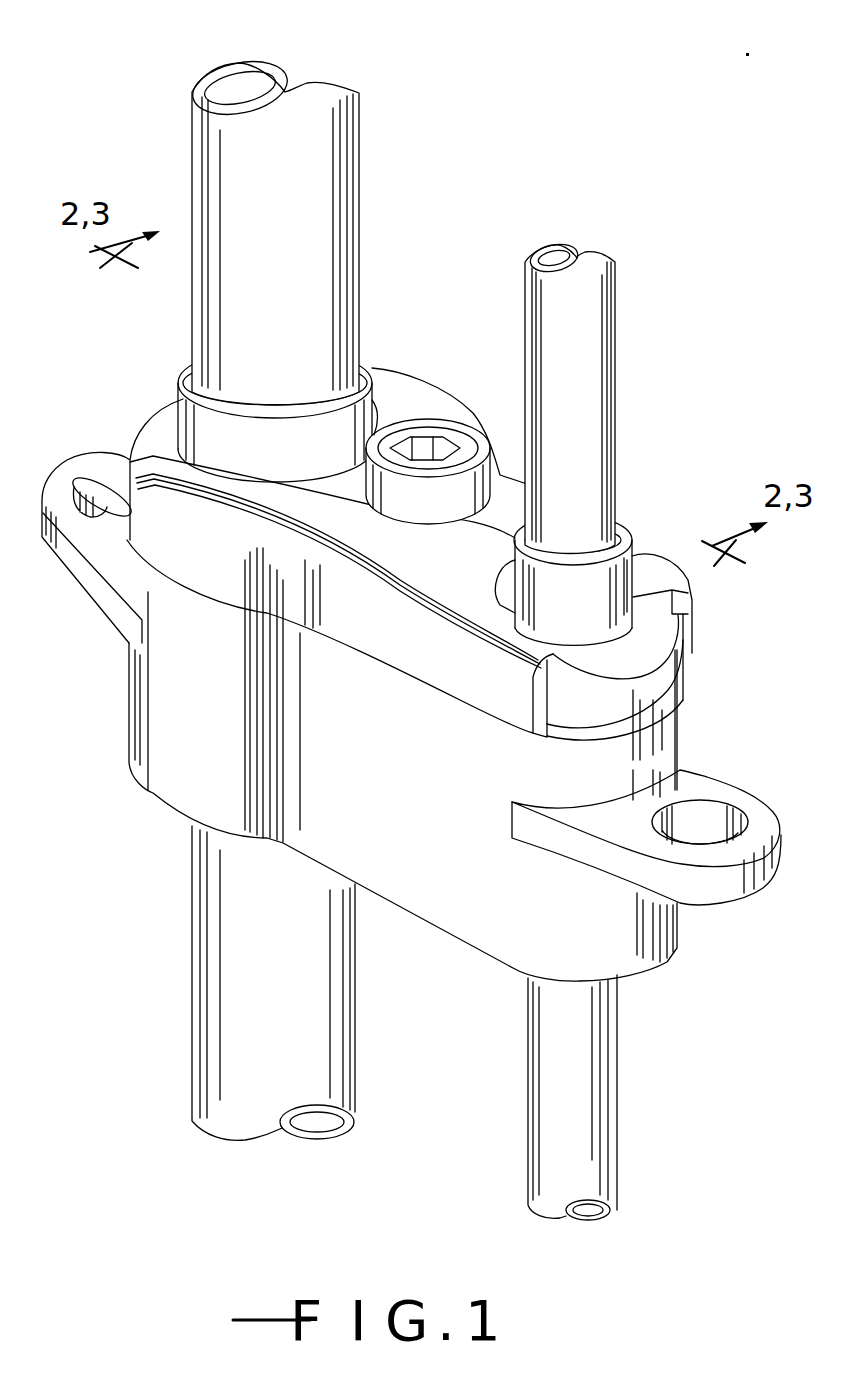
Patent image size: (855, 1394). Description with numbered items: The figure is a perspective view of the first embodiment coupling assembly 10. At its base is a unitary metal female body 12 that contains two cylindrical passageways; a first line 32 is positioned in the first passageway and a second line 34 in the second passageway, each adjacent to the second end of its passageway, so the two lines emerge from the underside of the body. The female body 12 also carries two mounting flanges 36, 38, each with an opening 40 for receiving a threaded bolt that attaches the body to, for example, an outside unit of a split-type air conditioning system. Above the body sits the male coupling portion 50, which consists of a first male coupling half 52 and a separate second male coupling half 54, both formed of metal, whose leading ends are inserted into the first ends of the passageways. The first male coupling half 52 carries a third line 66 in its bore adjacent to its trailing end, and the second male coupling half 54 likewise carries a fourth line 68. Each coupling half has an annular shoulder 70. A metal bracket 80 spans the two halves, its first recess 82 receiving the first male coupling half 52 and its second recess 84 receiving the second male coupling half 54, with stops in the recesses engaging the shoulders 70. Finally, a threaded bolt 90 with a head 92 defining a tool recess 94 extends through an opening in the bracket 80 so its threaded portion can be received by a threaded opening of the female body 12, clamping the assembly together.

The coupling assembly 10 is at (434, 84).
The female body 12 is at (160, 793).
The first line 32 is at (617, 1140).
The second line 34 is at (355, 1047).
The mounting flange 36 is at (70, 473).
The mounting flange 38 is at (718, 780).
The opening 40 is at (103, 512).
The male coupling portion 50 is at (697, 667).
The first male coupling half 52 is at (648, 540).
The second male coupling half 54 is at (185, 362).
The third line 66 is at (615, 262).
The fourth line 68 is at (359, 148).
The annular shoulder 70 is at (155, 430).
The bracket 80 is at (383, 633).
The first recess 82 is at (643, 588).
The second recess 84 is at (382, 405).
The threaded bolt 90 is at (410, 425).
The head 92 is at (433, 508).
The tool recess 94 is at (425, 448).